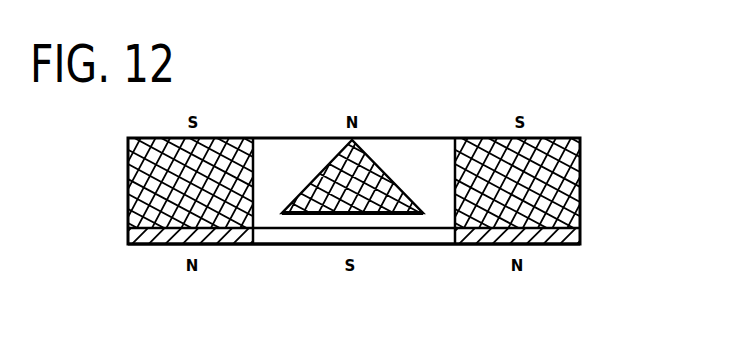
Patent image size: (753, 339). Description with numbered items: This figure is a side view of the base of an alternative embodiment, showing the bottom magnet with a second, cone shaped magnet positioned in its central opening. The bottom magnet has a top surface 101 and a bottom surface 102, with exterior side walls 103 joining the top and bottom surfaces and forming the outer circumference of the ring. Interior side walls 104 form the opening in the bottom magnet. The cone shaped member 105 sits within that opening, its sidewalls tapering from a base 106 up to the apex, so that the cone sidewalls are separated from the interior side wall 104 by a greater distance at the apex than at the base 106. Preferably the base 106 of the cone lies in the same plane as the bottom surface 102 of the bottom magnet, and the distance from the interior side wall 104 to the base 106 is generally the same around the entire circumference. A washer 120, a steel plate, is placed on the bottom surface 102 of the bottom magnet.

The top surface 101 is at (488, 138).
The bottom surface 102 is at (557, 232).
The exterior side wall 103 is at (580, 192).
The interior side wall 104 is at (455, 168).
The cone shaped member 105 is at (320, 172).
The base 106 is at (387, 213).
The washer 120 is at (468, 244).